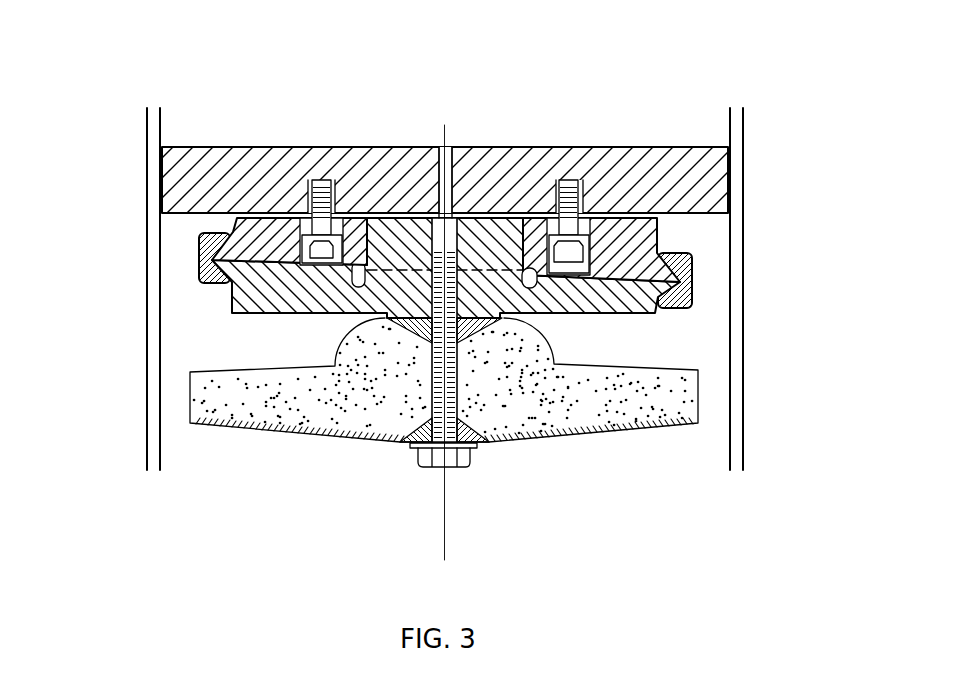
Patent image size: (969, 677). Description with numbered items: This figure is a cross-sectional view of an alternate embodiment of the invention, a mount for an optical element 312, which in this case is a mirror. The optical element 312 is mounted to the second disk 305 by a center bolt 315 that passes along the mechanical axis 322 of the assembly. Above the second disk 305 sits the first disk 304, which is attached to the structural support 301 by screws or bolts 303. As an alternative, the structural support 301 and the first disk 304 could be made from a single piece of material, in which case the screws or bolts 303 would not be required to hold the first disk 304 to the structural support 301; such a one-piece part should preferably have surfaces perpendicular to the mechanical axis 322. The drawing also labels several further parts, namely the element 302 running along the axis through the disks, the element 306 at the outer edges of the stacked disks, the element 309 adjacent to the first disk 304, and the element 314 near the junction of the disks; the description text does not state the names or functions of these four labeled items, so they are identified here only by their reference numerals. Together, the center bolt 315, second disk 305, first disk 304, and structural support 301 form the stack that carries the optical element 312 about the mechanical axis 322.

The structural support 301 is at (240, 145).
The threaded rod / center bolt 302 is at (440, 147).
The screws or bolts 303 is at (317, 176).
The first disk 304 is at (662, 232).
The second disk 305 is at (229, 300).
The seal / gasket 306 is at (697, 267).
The left wedge block 309 is at (377, 227).
The optical element 312 is at (526, 446).
The pin / hole 314 is at (520, 272).
The center bolt 315 is at (415, 468).
The mechanical axis 322 is at (438, 540).